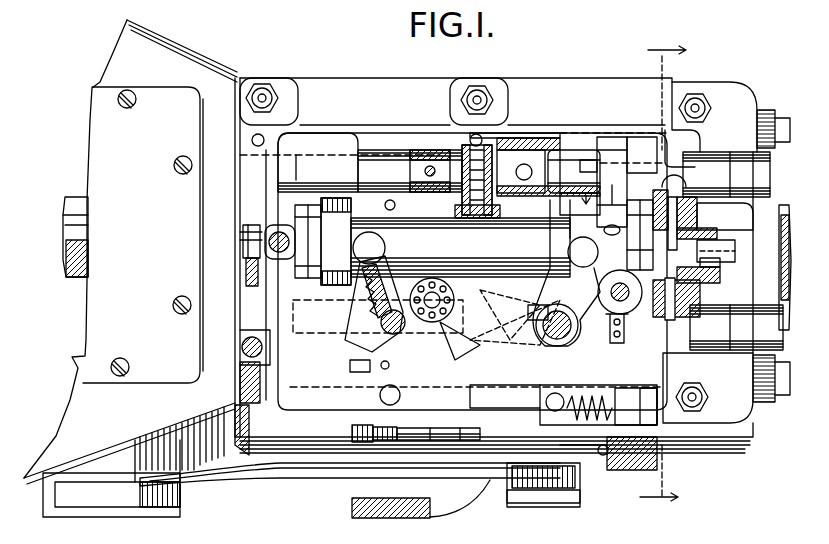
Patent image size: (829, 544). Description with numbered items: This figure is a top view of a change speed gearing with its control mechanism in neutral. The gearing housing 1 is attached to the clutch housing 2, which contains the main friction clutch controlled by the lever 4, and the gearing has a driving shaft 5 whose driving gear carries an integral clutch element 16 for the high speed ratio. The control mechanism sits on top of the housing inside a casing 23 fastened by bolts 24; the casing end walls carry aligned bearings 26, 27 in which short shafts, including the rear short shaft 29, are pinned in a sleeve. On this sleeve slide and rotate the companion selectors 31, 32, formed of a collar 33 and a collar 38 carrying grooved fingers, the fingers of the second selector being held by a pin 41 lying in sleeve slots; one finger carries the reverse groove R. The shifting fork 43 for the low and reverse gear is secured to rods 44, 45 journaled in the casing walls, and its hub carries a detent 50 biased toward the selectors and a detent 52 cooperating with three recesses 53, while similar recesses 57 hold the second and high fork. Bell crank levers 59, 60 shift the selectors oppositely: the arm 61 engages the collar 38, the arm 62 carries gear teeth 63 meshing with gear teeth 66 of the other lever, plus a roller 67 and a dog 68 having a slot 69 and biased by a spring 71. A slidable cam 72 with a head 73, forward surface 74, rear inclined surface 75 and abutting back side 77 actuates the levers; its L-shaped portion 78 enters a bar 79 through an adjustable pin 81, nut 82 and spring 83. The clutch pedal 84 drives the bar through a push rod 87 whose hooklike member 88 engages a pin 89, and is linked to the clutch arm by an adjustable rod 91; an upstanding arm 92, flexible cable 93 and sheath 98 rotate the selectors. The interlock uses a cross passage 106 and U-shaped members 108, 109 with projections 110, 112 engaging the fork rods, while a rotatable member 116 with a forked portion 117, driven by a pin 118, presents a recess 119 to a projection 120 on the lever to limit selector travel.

The change speed gearing housing 1 is at (737, 93).
The clutch housing 2 is at (187, 67).
The lever 4 is at (105, 492).
The driving shaft 5 is at (76, 196).
The clutch element 16 is at (663, 274).
The casing 23 is at (648, 133).
The bolts 24 is at (268, 90).
The bearing 26 is at (283, 221).
The bearing 27 is at (718, 236).
The short shaft 29 is at (719, 274).
The selector 31 is at (580, 165).
The selector 32 is at (370, 197).
The collar 33 is at (611, 205).
The collar 38 is at (390, 134).
The pin 41 is at (336, 198).
The shifting fork 43 is at (498, 160).
The rod 44 is at (402, 178).
The rod 45 is at (558, 170).
The detent 50 is at (502, 188).
The detent 52 is at (490, 143).
The recesses 53 is at (433, 133).
The recesses 57 is at (522, 321).
The bell crank lever 59 is at (400, 262).
The bell crank lever 60 is at (597, 272).
The arm 61 is at (390, 200).
The arm 62 is at (452, 258).
The gear teeth 63 is at (456, 284).
The gear teeth 66 is at (481, 346).
The roller 67 is at (457, 347).
The dog 68 is at (366, 338).
The slot 69 is at (347, 316).
The spring 71 is at (358, 302).
The cam 72 is at (645, 400).
The head 73 is at (382, 370).
The forward surface 74 is at (360, 370).
The rear inclined surface 75 is at (405, 378).
The back side 77 is at (540, 313).
The L-shaped portion 78 is at (536, 470).
The bar 79 is at (512, 402).
The adjustable pin 81 is at (590, 427).
The nut 82 is at (657, 455).
The spring 83 is at (600, 395).
The clutch pedal 84 is at (443, 512).
The push rod 87 is at (548, 506).
The hooklike member 88 is at (357, 442).
The pin 89 is at (383, 446).
The adjustable rod 91 is at (293, 472).
The upstanding arm 92 is at (242, 240).
The flexible cable 93 is at (234, 443).
The sheath 98 is at (239, 390).
The cross passage 106 is at (722, 250).
The U-shaped member 108 is at (690, 228).
The U-shaped member 109 is at (668, 182).
The projection 110 is at (692, 191).
The projecting portion 112 is at (688, 296).
The rotatable member 116 is at (720, 338).
The offset forked portion 117 is at (713, 357).
The pin 118 is at (625, 326).
The recess 119 is at (623, 282).
The projection 120 is at (588, 160).
The longitudinal groove R is at (628, 213).